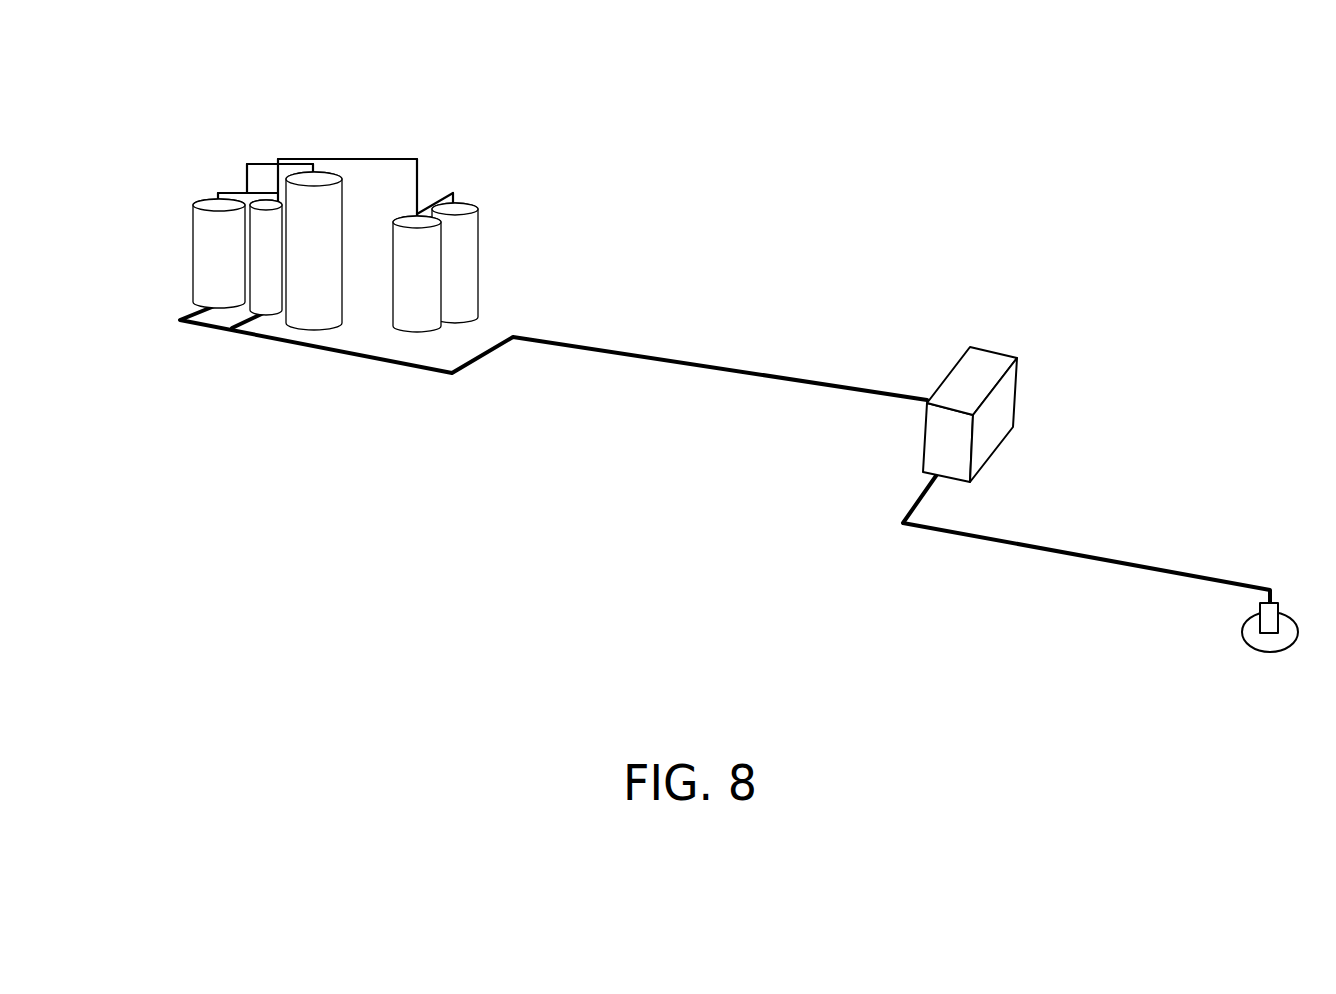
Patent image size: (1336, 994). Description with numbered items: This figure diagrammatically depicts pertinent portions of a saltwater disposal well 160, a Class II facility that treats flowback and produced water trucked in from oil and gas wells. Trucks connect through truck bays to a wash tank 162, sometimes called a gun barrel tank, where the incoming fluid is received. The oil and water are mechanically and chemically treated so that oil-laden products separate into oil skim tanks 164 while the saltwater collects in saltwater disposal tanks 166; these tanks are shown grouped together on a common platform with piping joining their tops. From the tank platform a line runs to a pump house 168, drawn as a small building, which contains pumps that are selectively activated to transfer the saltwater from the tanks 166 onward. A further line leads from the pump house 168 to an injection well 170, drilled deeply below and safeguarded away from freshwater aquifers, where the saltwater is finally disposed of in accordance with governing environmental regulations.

The saltwater disposal well 160 is at (459, 139).
The wash tank 162 is at (312, 303).
The oil skim tanks 164 is at (430, 275).
The saltwater disposal tanks 166 is at (267, 237).
The pump house 168 is at (965, 387).
The injection well 170 is at (1270, 620).